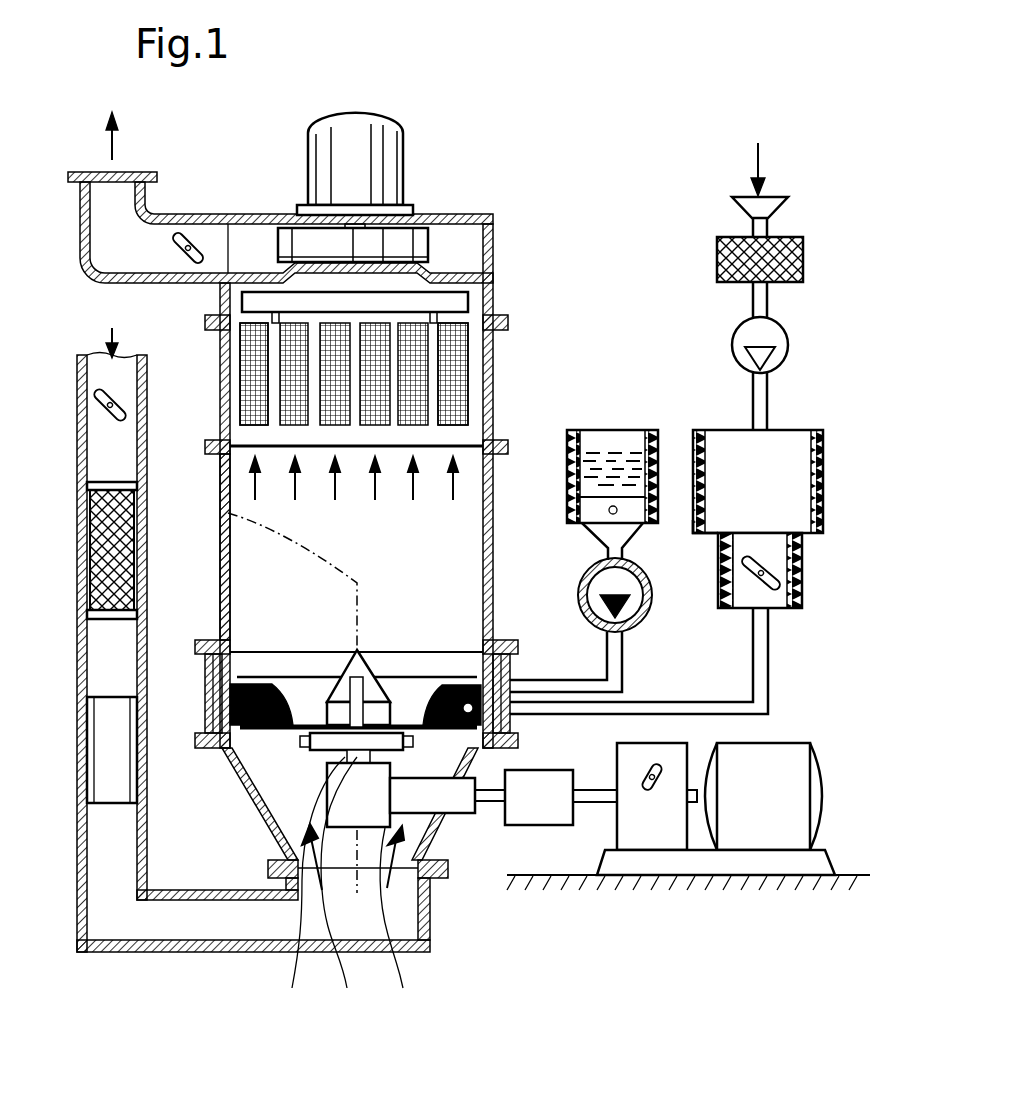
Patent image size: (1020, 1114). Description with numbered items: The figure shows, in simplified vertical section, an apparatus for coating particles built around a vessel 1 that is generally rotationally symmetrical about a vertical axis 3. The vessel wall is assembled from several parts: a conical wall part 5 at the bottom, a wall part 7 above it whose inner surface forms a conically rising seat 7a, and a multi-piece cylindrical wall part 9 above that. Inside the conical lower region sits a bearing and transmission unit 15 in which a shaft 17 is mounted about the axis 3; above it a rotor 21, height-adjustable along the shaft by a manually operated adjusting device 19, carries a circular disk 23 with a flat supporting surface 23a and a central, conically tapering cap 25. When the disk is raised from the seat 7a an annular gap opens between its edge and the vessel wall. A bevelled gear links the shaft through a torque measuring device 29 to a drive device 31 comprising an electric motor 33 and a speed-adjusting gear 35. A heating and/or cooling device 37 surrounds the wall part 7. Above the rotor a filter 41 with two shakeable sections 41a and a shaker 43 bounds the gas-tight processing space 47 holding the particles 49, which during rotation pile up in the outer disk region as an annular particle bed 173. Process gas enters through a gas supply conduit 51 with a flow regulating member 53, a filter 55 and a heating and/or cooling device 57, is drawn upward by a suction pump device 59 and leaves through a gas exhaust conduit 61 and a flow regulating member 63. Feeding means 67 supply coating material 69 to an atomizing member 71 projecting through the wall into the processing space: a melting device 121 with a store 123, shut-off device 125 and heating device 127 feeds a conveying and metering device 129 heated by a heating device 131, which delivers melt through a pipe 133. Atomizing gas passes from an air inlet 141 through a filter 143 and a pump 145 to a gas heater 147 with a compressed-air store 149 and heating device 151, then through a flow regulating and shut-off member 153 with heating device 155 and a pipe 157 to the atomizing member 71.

The vessel 1 is at (222, 376).
The vertical axis 3 is at (228, 518).
The conical wall part 5 is at (262, 750).
The wall part 7 is at (232, 690).
The seat 7a is at (300, 745).
The cylindrical wall part 9 is at (222, 549).
The bearing and transmission unit 15 is at (401, 918).
The shaft 17 is at (342, 882).
The adjusting device 19 is at (312, 882).
The rotor 21 is at (340, 760).
The circular disk 23 is at (292, 790).
The supporting surface 23a is at (317, 758).
The cap 25 is at (373, 672).
The torque measuring device 29 is at (522, 818).
The drive device 31 is at (713, 863).
The electric motor 33 is at (777, 840).
The gear 35 is at (657, 840).
The heating and/or cooling device 37 is at (207, 668).
The filter 41 is at (245, 346).
The filter sections 41a is at (243, 393).
The shaker 43 is at (248, 300).
The processing space 47 is at (240, 582).
The particles 49 is at (213, 707).
The gas supply conduit 51 is at (80, 372).
The flow regulating member 53 is at (95, 407).
The filter 55 is at (100, 545).
The heating and/or cooling device 57 is at (110, 697).
The pump device 59 is at (427, 243).
The gas exhaust conduit 61 is at (170, 216).
The flow regulating member 63 is at (203, 216).
The feeding means 67 is at (556, 436).
The coating material 69 is at (620, 432).
The atomizing member 71 is at (512, 668).
The melting device 121 is at (583, 428).
The store 123 is at (615, 447).
The shut-off device 125 is at (592, 512).
The heating device 127 is at (567, 497).
The conveying and metering device 129 is at (642, 605).
The heating device 131 is at (640, 630).
The pipe 133 is at (622, 682).
The air inlet 141 is at (738, 209).
The filter 143 is at (717, 266).
The pump 145 is at (733, 338).
The gas heater 147 is at (702, 432).
The store 149 is at (783, 432).
The heating device 151 is at (696, 524).
The flow regulating and shut-off member 153 is at (750, 575).
The heating device 155 is at (793, 610).
The pipe 157 is at (768, 688).
The annular particle bed 173 is at (263, 683).